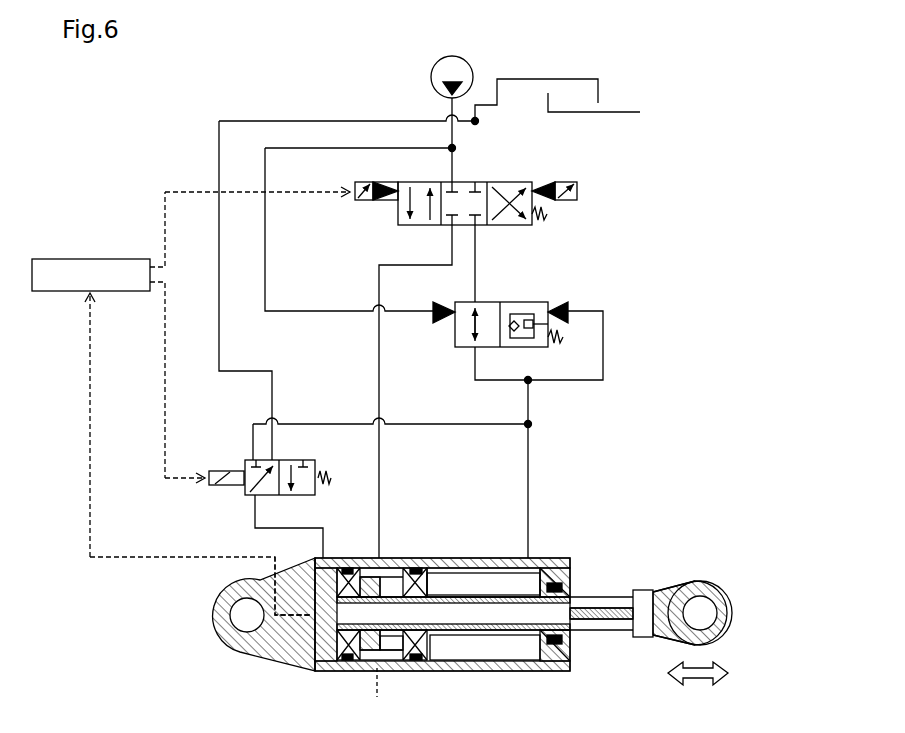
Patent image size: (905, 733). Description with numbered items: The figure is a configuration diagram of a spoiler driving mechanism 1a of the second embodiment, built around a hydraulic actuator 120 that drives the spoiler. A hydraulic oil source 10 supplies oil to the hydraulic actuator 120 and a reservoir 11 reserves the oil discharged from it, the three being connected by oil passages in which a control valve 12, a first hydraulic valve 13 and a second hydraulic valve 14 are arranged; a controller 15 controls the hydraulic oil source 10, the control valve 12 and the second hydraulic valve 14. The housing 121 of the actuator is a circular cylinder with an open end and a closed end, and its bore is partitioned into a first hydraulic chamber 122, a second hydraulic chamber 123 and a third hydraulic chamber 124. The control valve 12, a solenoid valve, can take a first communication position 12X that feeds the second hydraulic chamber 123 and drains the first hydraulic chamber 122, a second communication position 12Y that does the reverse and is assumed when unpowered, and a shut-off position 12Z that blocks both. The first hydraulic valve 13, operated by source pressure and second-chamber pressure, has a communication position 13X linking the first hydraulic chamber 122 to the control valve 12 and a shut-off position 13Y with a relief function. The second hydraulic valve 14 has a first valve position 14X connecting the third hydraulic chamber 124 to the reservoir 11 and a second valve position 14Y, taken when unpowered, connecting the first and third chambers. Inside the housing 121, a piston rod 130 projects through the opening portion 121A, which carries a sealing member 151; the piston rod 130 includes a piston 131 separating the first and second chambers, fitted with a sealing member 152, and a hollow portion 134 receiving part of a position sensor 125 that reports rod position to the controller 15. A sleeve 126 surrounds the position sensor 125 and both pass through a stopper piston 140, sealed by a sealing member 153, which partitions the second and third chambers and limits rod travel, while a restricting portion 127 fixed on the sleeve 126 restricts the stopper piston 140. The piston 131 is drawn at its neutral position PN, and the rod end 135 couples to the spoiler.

The spoiler driving mechanism 1a is at (162, 115).
The hydraulic oil source 10 is at (431, 76).
The reservoir 11 is at (645, 110).
The control valve 12 is at (371, 203).
The first communication position 12X is at (397, 210).
The shut-off position 12Z is at (447, 228).
The second communication position 12Y is at (502, 228).
The first hydraulic valve 13 is at (512, 326).
The communication position 13X is at (465, 348).
The shut-off position 13Y is at (532, 348).
The second hydraulic valve 14 is at (267, 480).
The first valve position 14X is at (268, 497).
The second valve position 14Y is at (302, 497).
The controller 15 is at (90, 259).
The hydraulic actuator 120 is at (444, 620).
The housing 121 is at (460, 556).
The opening portion 121A is at (570, 640).
The first hydraulic chamber 122 is at (518, 653).
The second hydraulic chamber 123 is at (410, 660).
The third hydraulic chamber 124 is at (318, 672).
The position sensor 125 is at (455, 640).
The sleeve 126 is at (495, 596).
The restricting portion 127 is at (367, 663).
The piston rod 130 is at (713, 580).
The piston 131 is at (431, 578).
The hollow portion 134 is at (593, 605).
The pin hole 135 is at (732, 612).
The stopper piston 140 is at (296, 553).
The sealing member 151 is at (547, 573).
The sealing member 152 is at (418, 567).
The sealing member 153 is at (347, 558).
The neutral position PN is at (376, 694).